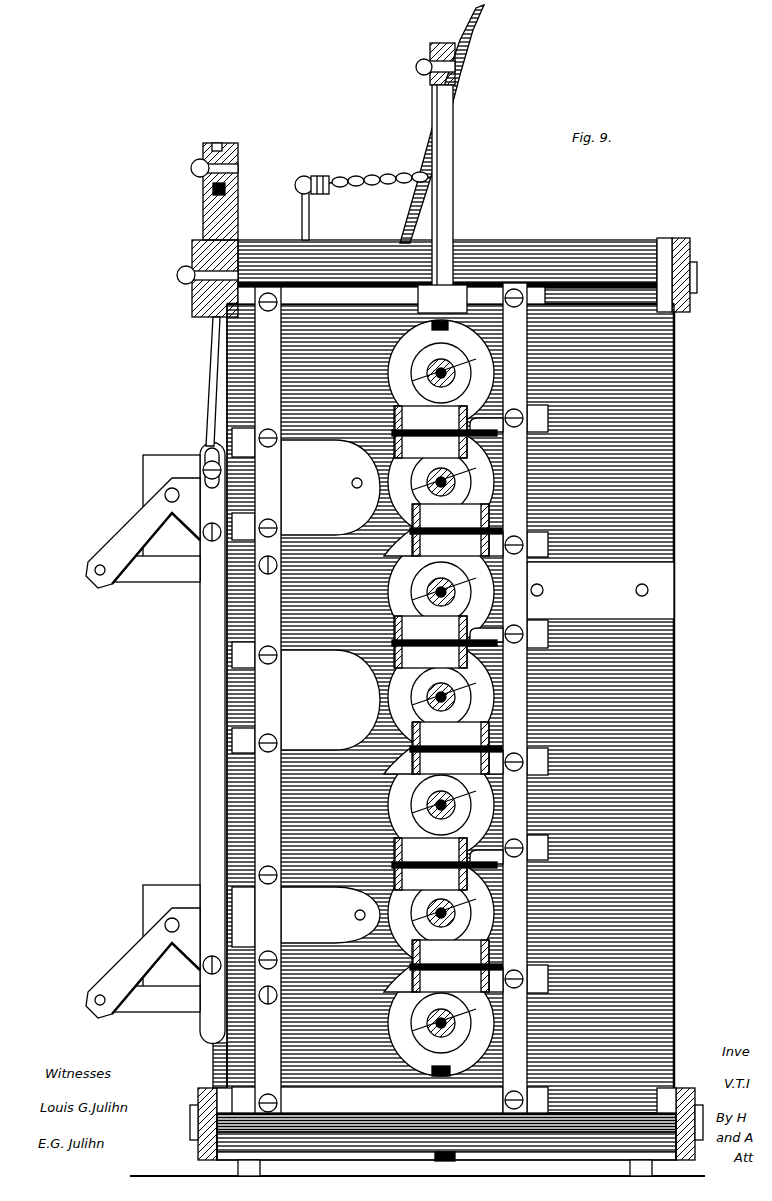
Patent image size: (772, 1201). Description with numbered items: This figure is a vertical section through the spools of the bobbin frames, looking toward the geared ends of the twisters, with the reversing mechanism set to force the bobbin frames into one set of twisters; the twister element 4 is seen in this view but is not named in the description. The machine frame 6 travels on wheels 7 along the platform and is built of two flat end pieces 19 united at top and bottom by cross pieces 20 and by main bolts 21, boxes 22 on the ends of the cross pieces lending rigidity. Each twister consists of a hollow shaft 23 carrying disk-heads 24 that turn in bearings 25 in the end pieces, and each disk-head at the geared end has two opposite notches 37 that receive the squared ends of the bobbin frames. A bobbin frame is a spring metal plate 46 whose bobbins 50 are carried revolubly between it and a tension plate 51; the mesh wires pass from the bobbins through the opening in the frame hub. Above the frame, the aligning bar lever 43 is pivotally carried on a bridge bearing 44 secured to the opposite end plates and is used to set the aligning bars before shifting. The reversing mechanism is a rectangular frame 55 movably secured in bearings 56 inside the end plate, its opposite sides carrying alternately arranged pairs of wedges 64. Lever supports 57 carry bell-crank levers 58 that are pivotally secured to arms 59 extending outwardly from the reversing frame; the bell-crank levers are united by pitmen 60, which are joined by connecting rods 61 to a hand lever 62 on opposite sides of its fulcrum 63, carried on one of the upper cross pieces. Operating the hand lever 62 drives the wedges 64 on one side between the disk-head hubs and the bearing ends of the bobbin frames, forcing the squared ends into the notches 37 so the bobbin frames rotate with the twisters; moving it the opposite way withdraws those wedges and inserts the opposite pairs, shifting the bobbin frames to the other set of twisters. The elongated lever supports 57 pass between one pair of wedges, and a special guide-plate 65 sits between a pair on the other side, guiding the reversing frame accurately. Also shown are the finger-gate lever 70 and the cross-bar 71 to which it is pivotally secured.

The cutter wheel 4 is at (441, 698).
The frame 6 is at (675, 722).
The wheels 7 is at (417, 1169).
The end pieces 19 is at (443, 700).
The cross pieces 20 is at (196, 318).
The main bolts 21 is at (446, 700).
The boxes 22 is at (199, 320).
The hollow shaft 23 is at (425, 709).
The disk-heads 24 is at (443, 698).
The bearings 25 is at (431, 709).
The notches 37 is at (448, 331).
The aligning bar lever 43 is at (437, 42).
The bridge bearing 44 is at (454, 205).
The spring metal plate 46 is at (394, 422).
The bobbins 50 is at (447, 699).
The tension plate 51 is at (498, 438).
The rectangular frame 55 is at (391, 295).
The bearings 56 is at (468, 298).
The lever supports 57 is at (165, 732).
The bell-crank levers 58 is at (143, 748).
The arms 59 is at (150, 784).
The pitmen 60 is at (212, 742).
The connecting rods 61 is at (212, 397).
The hand lever 62 is at (222, 144).
The fulcrum 63 is at (198, 176).
The wedges 64 is at (548, 420).
The guide-plate 65 is at (493, 695).
The pivoted lever 70 is at (309, 212).
The cross-bar 71 is at (310, 178).